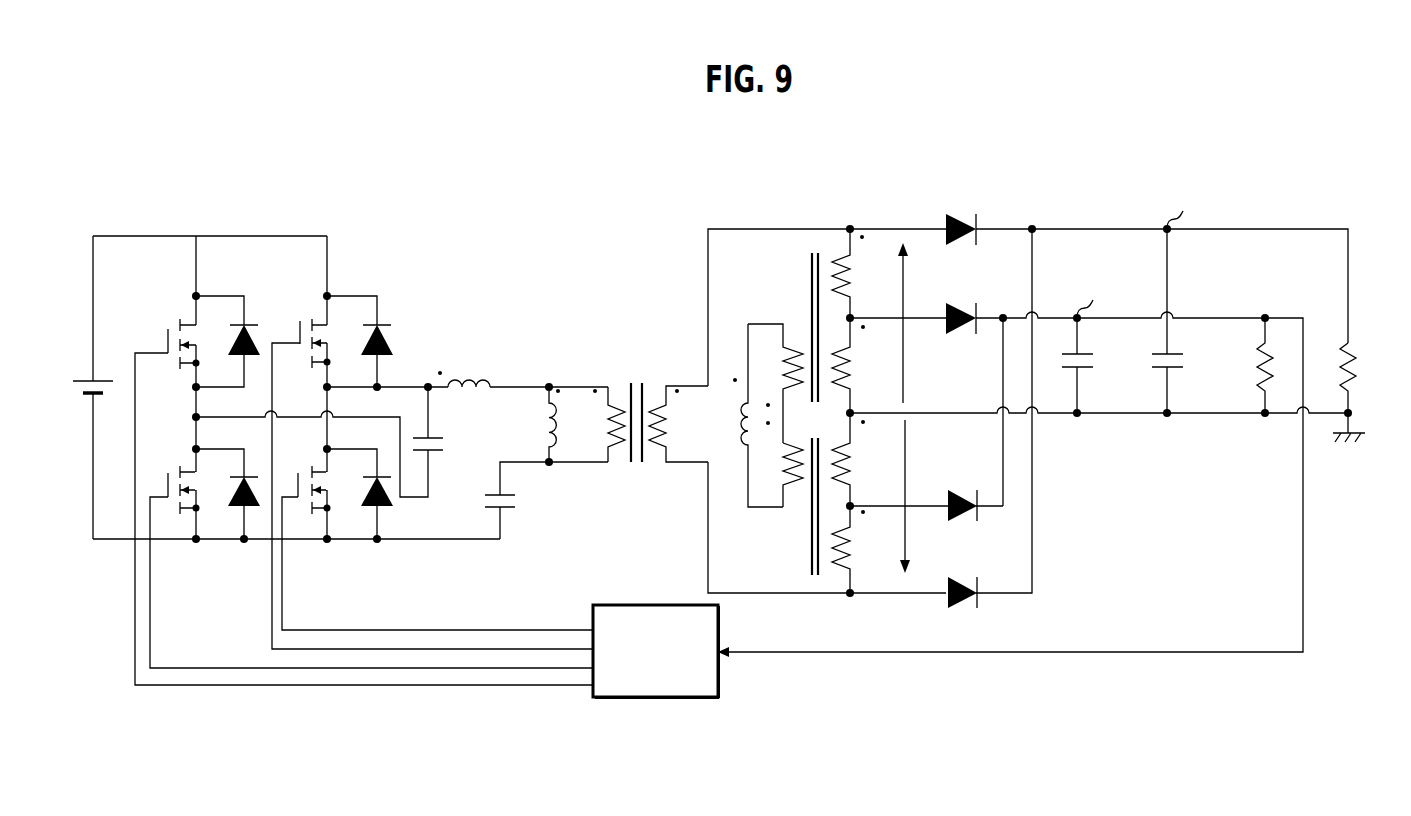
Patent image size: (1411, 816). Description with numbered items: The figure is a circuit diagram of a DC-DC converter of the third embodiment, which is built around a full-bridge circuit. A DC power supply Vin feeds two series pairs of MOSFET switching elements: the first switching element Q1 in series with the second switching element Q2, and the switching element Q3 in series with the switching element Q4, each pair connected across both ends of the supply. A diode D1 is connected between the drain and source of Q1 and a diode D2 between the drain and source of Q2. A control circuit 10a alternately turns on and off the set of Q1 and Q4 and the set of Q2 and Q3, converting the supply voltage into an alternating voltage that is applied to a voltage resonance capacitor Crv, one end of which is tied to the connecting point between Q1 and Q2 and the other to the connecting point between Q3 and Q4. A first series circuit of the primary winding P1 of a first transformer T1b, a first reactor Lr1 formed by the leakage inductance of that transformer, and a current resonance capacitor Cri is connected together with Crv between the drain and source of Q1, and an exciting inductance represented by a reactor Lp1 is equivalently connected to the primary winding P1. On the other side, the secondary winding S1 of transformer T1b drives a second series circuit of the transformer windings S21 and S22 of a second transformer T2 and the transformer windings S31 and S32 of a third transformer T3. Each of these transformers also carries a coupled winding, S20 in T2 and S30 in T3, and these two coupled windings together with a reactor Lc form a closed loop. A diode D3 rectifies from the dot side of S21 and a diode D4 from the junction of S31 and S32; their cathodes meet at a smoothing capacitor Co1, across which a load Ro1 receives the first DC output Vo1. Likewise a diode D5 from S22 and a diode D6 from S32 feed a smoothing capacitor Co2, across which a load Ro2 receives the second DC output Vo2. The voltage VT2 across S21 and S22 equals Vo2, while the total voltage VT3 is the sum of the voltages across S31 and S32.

The control circuit 10a is at (718, 690).
The DC power supply Vin is at (97, 375).
The first switching element Q1 is at (437, 548).
The second switching element Q2 is at (432, 442).
The switching element Q3 is at (366, 567).
The switching element Q4 is at (364, 460).
The diode D1 is at (360, 494).
The diode D2 is at (368, 341).
The diode D3 is at (228, 494).
The diode D4 is at (234, 341).
The diode D5 is at (962, 240).
The diode D6 is at (963, 583).
The first reactor Lr1 is at (464, 366).
The voltage resonance capacitor Crv is at (446, 419).
The current resonance capacitor Cri is at (517, 500).
The reactor (exciting inductance) Lp1 is at (537, 424).
The first transformer T1b is at (636, 409).
The primary winding P1 is at (604, 424).
The secondary winding S1 is at (678, 424).
The reactor Lc is at (751, 415).
The coupled winding S20 is at (775, 374).
The coupled winding S30 is at (785, 487).
The second transformer T2 is at (800, 327).
The third transformer T3 is at (801, 507).
The transformer winding S21 is at (861, 365).
The transformer winding S22 is at (861, 273).
The transformer winding S31 is at (862, 459).
The transformer winding S32 is at (862, 549).
The voltage generated in transformer windings S21 and S22 VT2 is at (920, 323).
The total voltage of transformer windings S31 and S32 VT3 is at (921, 496).
The first DC output Vo1 is at (1095, 300).
The second DC output Vo2 is at (1185, 210).
The smoothing capacitor Co1 is at (1089, 365).
The smoothing capacitor Co2 is at (1178, 321).
The load Ro1 is at (1246, 365).
The load Ro2 is at (1363, 392).